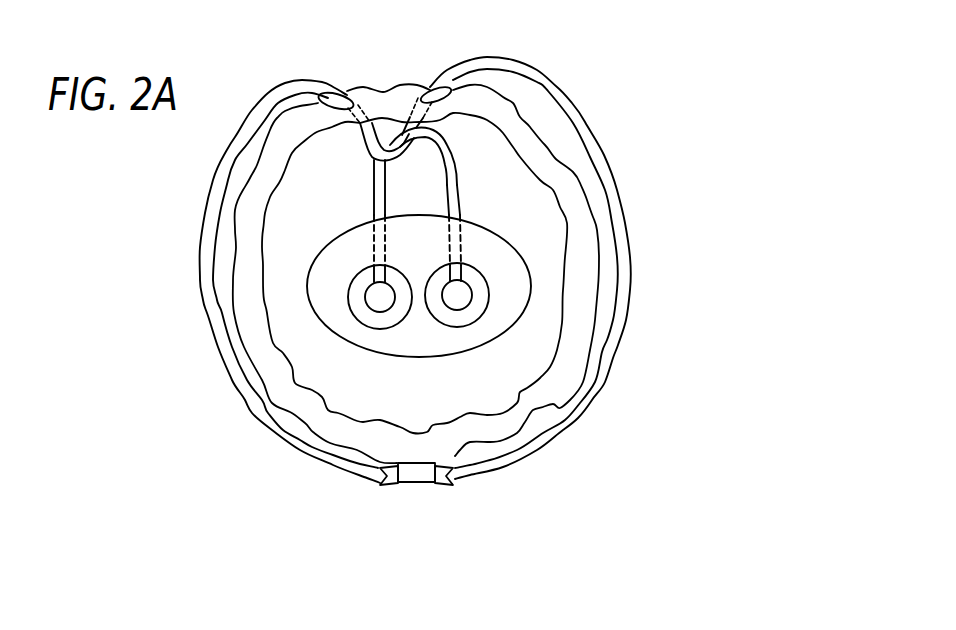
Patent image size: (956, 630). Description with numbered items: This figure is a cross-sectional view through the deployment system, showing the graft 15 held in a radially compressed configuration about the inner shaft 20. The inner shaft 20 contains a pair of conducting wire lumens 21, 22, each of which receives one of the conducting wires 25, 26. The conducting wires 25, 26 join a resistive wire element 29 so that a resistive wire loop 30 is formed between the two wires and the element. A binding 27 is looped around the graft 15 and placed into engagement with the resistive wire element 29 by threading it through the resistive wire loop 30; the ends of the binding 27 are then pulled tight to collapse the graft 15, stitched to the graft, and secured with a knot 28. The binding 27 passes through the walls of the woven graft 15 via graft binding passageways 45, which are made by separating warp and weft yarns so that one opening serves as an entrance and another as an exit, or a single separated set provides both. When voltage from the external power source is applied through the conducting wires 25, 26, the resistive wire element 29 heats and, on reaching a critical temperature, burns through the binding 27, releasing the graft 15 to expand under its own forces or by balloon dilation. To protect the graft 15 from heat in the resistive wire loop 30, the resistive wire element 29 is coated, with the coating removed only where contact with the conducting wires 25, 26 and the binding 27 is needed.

The graft 15 is at (374, 83).
The inner shaft 20 is at (520, 240).
The conducting wire lumen 21 is at (382, 332).
The conducting wire lumen 22 is at (470, 323).
The conducting wire 25 is at (380, 298).
The conducting wire 26 is at (458, 295).
The binding 27 is at (585, 92).
The knot 28 is at (408, 490).
The resistive wire element 29 is at (460, 178).
The resistive wire loop 30 is at (412, 128).
The graft binding passageway 45 is at (346, 89).